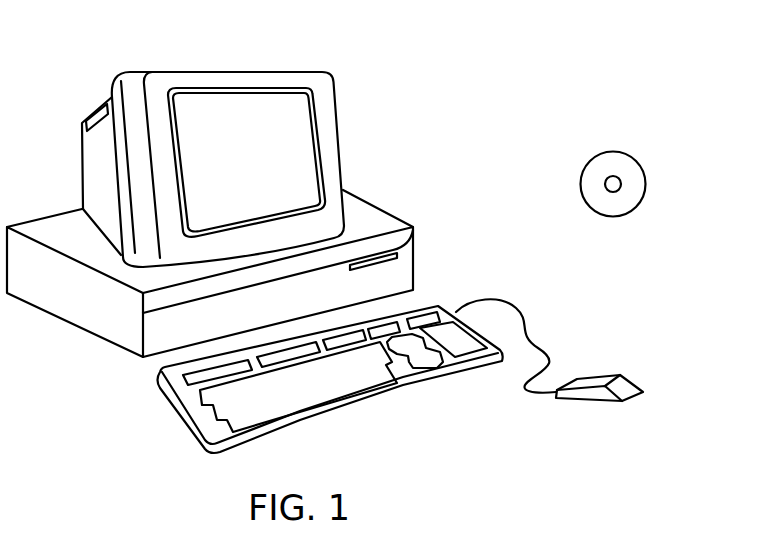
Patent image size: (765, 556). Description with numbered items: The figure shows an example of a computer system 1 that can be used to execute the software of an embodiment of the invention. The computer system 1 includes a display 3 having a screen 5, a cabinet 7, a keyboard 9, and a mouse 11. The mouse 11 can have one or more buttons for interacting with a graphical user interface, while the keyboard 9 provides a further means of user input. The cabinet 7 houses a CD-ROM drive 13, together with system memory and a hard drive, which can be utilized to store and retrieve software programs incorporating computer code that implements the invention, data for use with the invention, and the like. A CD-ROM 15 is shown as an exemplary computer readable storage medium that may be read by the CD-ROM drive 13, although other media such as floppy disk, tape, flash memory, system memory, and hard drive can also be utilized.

The computer system 1 is at (523, 52).
The display 3 is at (343, 163).
The screen 5 is at (313, 130).
The cabinet 7 is at (88, 334).
The keyboard 9 is at (347, 405).
The mouse 11 is at (622, 374).
The CD-ROM drive 13 is at (415, 226).
The CD-ROM 15 is at (620, 152).